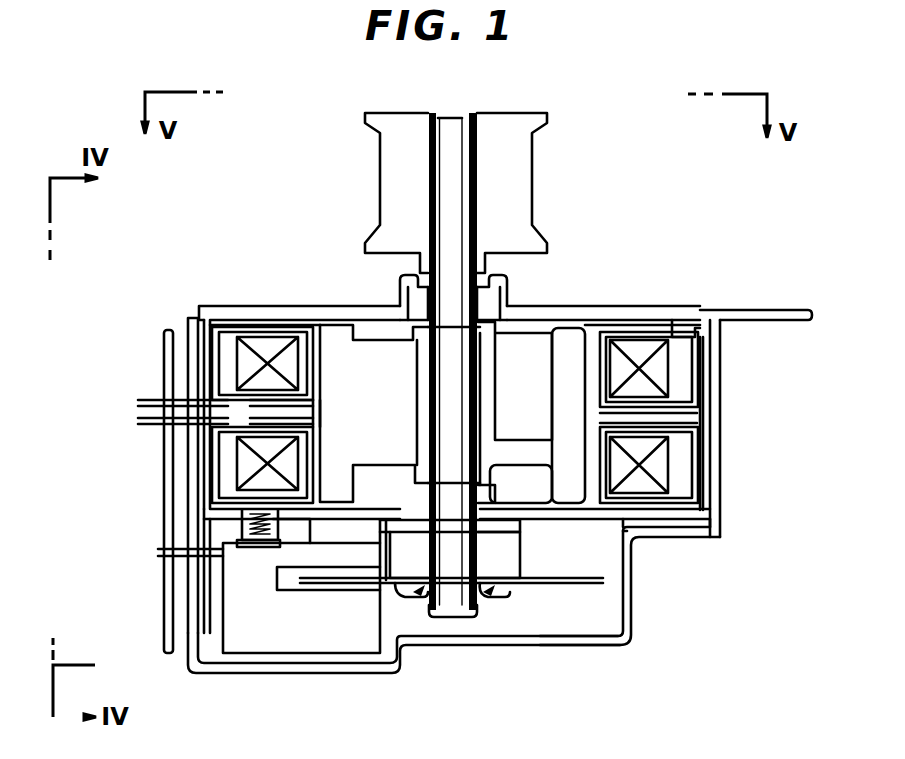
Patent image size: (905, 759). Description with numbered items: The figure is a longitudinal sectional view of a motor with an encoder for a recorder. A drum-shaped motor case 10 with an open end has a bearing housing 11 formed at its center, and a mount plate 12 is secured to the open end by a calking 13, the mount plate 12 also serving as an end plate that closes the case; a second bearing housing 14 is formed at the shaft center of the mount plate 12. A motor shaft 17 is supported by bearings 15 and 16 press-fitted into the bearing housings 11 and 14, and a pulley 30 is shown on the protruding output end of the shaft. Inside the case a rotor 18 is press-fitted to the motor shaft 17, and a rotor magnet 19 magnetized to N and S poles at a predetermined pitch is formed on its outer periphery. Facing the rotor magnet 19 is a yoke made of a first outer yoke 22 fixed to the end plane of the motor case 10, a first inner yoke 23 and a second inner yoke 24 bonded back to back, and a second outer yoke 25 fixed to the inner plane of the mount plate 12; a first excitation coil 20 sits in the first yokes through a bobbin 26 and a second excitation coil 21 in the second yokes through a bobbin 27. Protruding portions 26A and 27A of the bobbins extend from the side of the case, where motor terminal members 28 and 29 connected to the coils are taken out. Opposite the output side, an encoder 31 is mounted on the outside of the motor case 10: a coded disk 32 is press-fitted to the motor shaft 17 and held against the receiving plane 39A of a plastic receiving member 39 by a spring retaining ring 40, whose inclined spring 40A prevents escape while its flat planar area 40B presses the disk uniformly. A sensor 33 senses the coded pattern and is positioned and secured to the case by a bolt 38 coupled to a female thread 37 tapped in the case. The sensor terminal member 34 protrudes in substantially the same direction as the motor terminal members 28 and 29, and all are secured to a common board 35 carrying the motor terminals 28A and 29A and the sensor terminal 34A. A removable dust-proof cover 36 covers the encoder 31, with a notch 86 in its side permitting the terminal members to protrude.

The motor case 10 is at (600, 521).
The bearing housing 11 is at (515, 493).
The mount plate 12 is at (335, 316).
The calking 13 is at (693, 322).
The bearing housing 14 is at (503, 298).
The bearing 15 is at (497, 515).
The bearing 16 is at (513, 278).
The motor shaft 17 is at (465, 379).
The rotor 18 is at (373, 447).
The rotor magnet 19 is at (563, 367).
The first excitation coil 20 is at (700, 504).
The second excitation coil 21 is at (660, 362).
The first outer yoke 22 is at (637, 507).
The first inner yoke 23 is at (662, 422).
The second inner yoke 24 is at (678, 407).
The second outer yoke 25 is at (637, 327).
The bobbin 26 is at (645, 485).
The protruding portion of bobbin 26A is at (213, 430).
The bobbin 27 is at (658, 388).
The protruding portion of bobbin 27A is at (208, 397).
The motor terminal member 28 is at (180, 430).
The motor terminal 28A is at (150, 421).
The motor terminal member 29 is at (207, 393).
The motor terminal 29A is at (150, 401).
The pulley 30 is at (515, 172).
The encoder 31 is at (405, 598).
The coded disk 32 is at (630, 643).
The sensor 33 is at (282, 635).
The sensor terminal member 34 is at (200, 565).
The sensor terminal 34A is at (158, 553).
The board 35 is at (163, 513).
The dust-proof cover 36 is at (580, 653).
The female thread 37 is at (283, 523).
The bolt 38 is at (258, 550).
The receiving member 39 is at (493, 557).
The receiving plane 39A is at (393, 583).
The spring retaining ring 40 is at (497, 598).
The spring 40A is at (425, 600).
The planar area 40B is at (398, 572).
The notch 86 is at (192, 607).